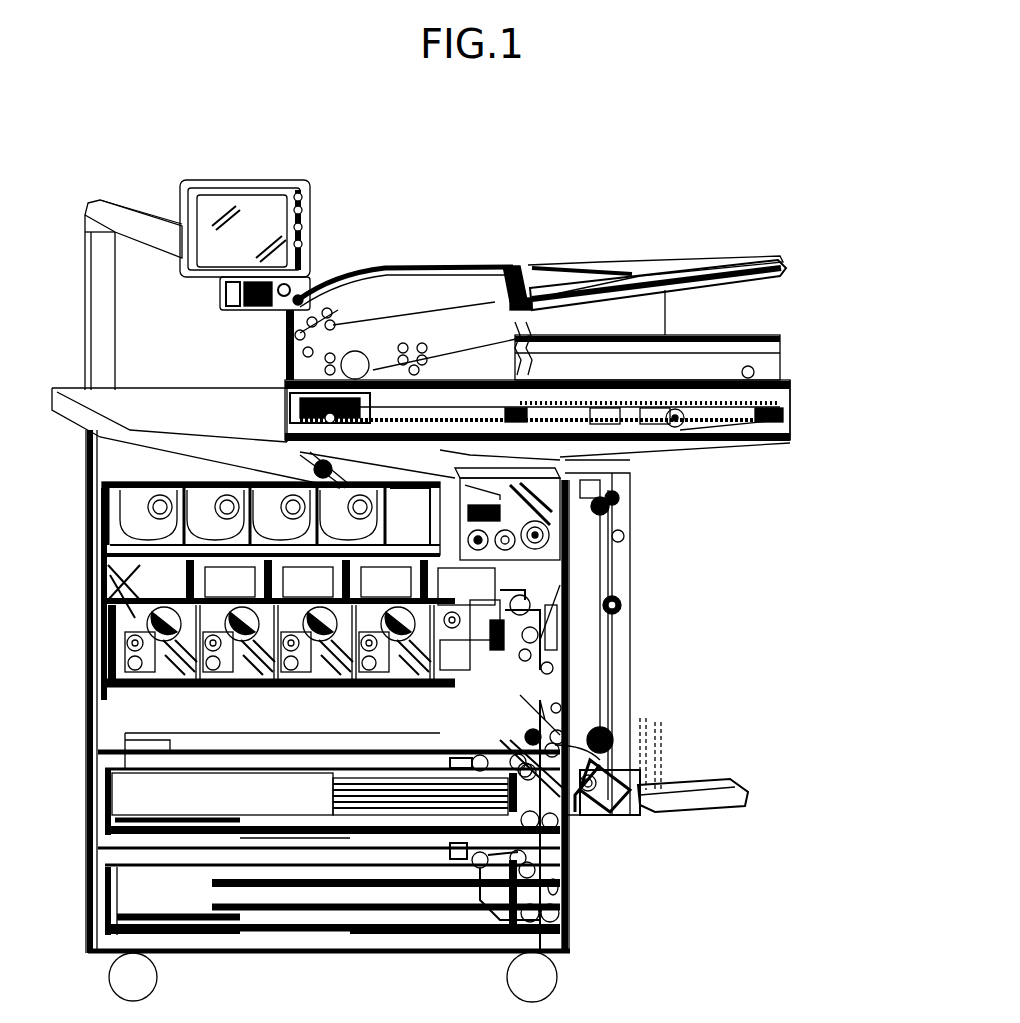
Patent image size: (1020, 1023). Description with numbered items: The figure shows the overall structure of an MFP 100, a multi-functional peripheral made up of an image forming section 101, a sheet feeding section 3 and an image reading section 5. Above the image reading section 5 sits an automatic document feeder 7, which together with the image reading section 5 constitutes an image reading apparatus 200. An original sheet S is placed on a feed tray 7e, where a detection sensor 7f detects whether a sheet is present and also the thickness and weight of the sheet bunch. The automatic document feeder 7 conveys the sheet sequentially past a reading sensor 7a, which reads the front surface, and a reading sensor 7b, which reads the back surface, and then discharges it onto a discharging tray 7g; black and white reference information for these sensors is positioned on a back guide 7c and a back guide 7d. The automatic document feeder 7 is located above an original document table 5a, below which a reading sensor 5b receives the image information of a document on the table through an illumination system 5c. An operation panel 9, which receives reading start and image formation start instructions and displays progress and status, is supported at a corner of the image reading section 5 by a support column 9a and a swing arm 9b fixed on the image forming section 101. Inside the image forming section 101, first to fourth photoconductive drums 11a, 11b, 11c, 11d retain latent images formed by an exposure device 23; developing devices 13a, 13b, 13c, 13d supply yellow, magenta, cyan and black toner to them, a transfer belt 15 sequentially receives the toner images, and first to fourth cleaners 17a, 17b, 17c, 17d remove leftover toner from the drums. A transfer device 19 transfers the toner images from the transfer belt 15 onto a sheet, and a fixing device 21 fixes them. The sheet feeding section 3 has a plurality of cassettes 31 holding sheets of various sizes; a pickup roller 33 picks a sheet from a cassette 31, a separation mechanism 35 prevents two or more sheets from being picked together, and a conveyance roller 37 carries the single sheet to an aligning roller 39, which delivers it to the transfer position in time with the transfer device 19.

The MFP 100 is at (666, 160).
The image forming section 101 is at (698, 548).
The image reading apparatus 200 is at (817, 440).
The sheet feeding section 3 is at (740, 717).
The image reading section 5 is at (800, 378).
The original document table 5a is at (522, 334).
The reading sensor 5b is at (640, 418).
The illumination system 5c is at (282, 442).
The automatic document feeder 7 is at (356, 292).
The reading sensor 7a is at (377, 360).
The reading sensor 7b is at (408, 345).
The back guide 7c is at (345, 358).
The back guide 7d is at (425, 368).
The feed tray 7e is at (733, 262).
The detection sensor 7f is at (517, 265).
The discharging tray 7g is at (707, 327).
The original sheet S is at (672, 262).
The operation panel 9 is at (310, 214).
The support column 9a is at (118, 325).
The swing arm 9b is at (122, 212).
The photoconductive drum 11a is at (420, 690).
The photoconductive drum 11b is at (344, 690).
The photoconductive drum 11c is at (266, 690).
The photoconductive drum 11d is at (190, 690).
The developing device 13a is at (374, 690).
The developing device 13b is at (302, 690).
The developing device 13c is at (226, 690).
The developing device 13d is at (152, 690).
The transfer belt 15 is at (492, 564).
The cleaner 17a is at (452, 676).
The cleaner 17b is at (368, 604).
The cleaner 17c is at (290, 604).
The cleaner 17d is at (210, 604).
The transfer device 19 is at (566, 614).
The fixing device 21 is at (498, 461).
The exposure device 23 is at (300, 752).
The cassette 31 is at (262, 797).
The pickup roller 33 is at (480, 748).
The separation mechanism 35 is at (512, 742).
The conveyance roller 37 is at (572, 728).
The aligning roller 39 is at (555, 710).